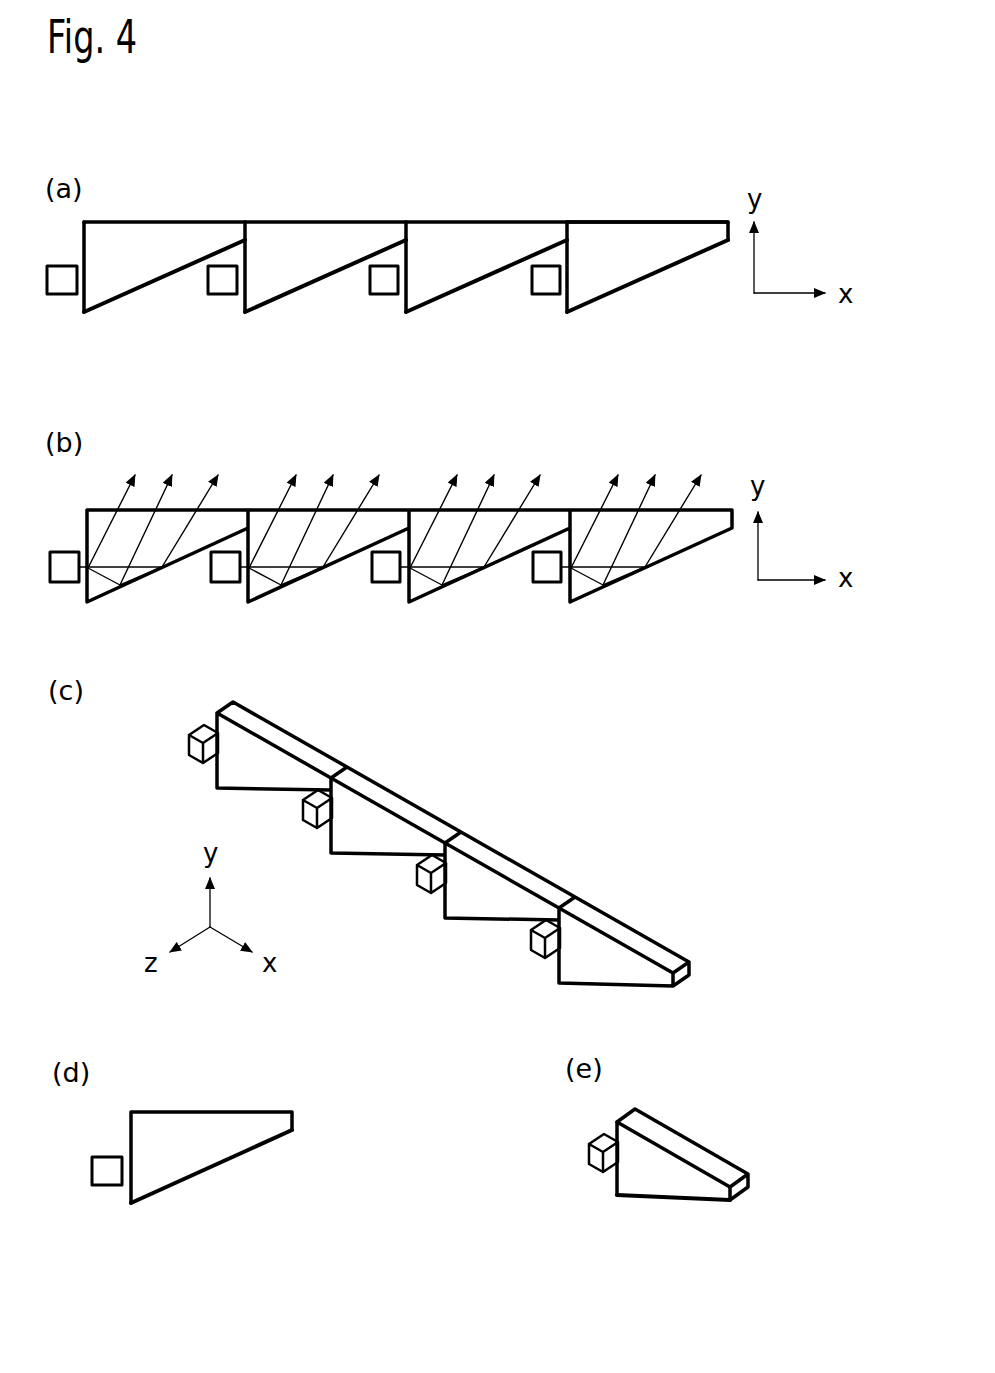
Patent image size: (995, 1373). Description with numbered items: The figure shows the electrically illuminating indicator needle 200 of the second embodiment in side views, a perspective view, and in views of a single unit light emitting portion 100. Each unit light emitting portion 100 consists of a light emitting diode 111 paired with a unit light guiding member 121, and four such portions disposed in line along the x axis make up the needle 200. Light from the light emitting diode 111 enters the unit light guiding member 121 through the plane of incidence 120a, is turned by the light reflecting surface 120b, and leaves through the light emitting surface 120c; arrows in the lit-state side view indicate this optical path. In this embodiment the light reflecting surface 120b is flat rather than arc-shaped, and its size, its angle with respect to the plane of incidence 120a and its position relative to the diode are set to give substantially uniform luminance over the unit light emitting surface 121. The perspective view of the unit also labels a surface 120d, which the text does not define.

The unit light emitting portion 100 is at (484, 1130).
The light emitting diode 111 is at (60, 294).
The plane of incidence 120a is at (578, 268).
The light reflecting surface 120b is at (622, 272).
The light emitting surface 120c is at (672, 230).
The side surface 120d is at (634, 1176).
The unit light guiding member 121 is at (185, 238).
The electrically illuminating indicator needle 200 is at (443, 549).